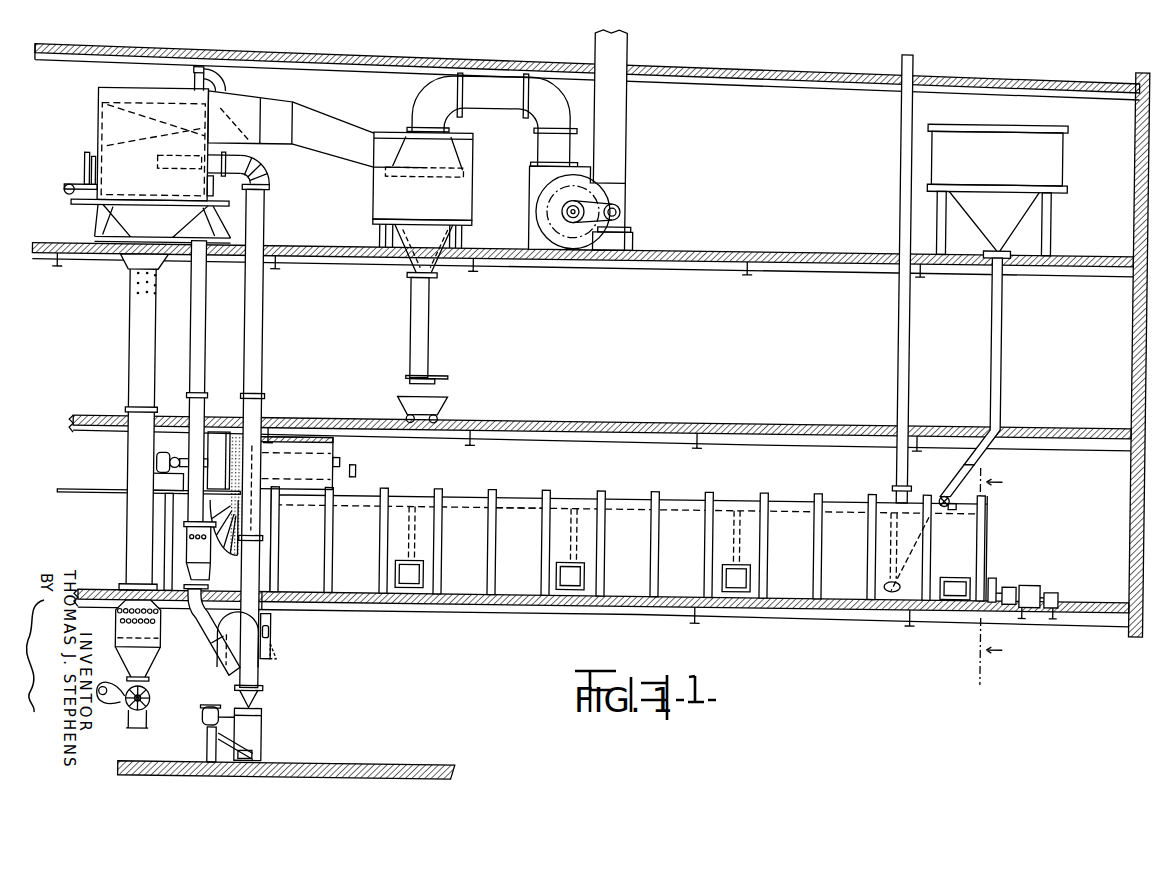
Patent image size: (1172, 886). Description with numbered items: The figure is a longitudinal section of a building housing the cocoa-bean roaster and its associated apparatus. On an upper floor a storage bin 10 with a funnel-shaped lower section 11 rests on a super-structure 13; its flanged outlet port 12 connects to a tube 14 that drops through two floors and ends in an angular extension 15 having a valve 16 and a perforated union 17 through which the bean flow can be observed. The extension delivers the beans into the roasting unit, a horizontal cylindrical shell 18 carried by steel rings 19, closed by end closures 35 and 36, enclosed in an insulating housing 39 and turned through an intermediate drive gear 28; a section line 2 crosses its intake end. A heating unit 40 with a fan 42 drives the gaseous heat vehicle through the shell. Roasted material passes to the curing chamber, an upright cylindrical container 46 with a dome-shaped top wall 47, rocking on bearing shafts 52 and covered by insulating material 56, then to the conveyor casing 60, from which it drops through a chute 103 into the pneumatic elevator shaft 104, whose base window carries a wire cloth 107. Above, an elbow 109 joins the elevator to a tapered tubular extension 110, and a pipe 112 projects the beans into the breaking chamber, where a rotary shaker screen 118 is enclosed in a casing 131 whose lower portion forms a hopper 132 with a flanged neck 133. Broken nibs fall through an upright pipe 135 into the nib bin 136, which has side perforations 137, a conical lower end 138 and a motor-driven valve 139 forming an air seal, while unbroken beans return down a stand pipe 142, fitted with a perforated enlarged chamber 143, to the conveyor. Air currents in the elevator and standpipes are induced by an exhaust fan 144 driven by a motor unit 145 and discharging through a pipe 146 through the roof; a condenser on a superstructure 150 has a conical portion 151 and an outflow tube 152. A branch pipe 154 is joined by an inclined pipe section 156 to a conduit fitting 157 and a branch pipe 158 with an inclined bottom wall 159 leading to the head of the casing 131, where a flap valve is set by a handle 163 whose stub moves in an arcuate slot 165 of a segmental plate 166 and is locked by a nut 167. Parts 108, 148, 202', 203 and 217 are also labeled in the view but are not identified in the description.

The section line 2- 2 is at (992, 573).
The storage bin 10 is at (974, 138).
The funnel-shaped lower section 11 is at (1027, 204).
The outlet port 12 is at (1003, 258).
The super-structure 13 is at (937, 233).
The downwardly projecting tube 14 is at (994, 350).
The angular extension 15 is at (957, 473).
The valve 16 is at (943, 491).
The perforated union 17 is at (953, 495).
The cylindrical shell 18 is at (359, 500).
The steel rings 19 is at (416, 509).
The intermediate drive gear 28 is at (995, 573).
The closure 35 is at (275, 611).
The closure 36 is at (888, 503).
The housing 39 is at (524, 514).
The heating unit 40 is at (335, 461).
The fan 42 is at (220, 438).
The cylindrical container 46 is at (229, 630).
The dome-shaped top wall 47 is at (279, 653).
The coaxial bearing shafts 52 is at (225, 668).
The insulating material 56 is at (273, 641).
The cylindrical casing 60 is at (211, 723).
The chute 103 is at (244, 740).
The pneumatic elevator shaft 104 is at (256, 372).
The wire cloth 107 is at (257, 761).
The brace 108 is at (224, 745).
The elbow 109 is at (260, 172).
The tapered tubular extension 110 is at (222, 182).
The pipe 112 is at (169, 163).
The rotary shaker screen 118 is at (132, 140).
The casing 131 is at (141, 104).
The hopper 132 is at (163, 223).
The flanged neck 133 is at (128, 271).
The upright pipe 135 is at (129, 356).
The nib bin 136 is at (160, 649).
The side perforations 137 is at (120, 629).
The tapered conical lower end 138 is at (151, 674).
The motor driven valve 139 is at (151, 706).
The stand pipe 142 is at (195, 318).
The enlarged chamber 143 is at (199, 558).
The exhaust fan 144 is at (544, 211).
The motor unit 145 is at (622, 207).
The discharge pipe 146 is at (613, 137).
The dust collector 148 is at (423, 178).
The superstructure 150 is at (375, 238).
The conical portion 151 is at (418, 257).
The outflow tube 152 is at (427, 330).
The branch pipe 154 is at (386, 146).
The inclined pipe section 156 is at (323, 126).
The intermediate conduit fitting 157 is at (259, 118).
The branch pipe 158 is at (229, 105).
The upwardly inclined bottom wall 159 is at (161, 133).
The handle 163 is at (195, 72).
The arcuate slot 165 is at (205, 82).
The segmental plate 166 is at (198, 90).
The nut 167 is at (188, 75).
The bracket 202' is at (366, 464).
The bracket 203 is at (345, 470).
The chute 217 is at (222, 527).